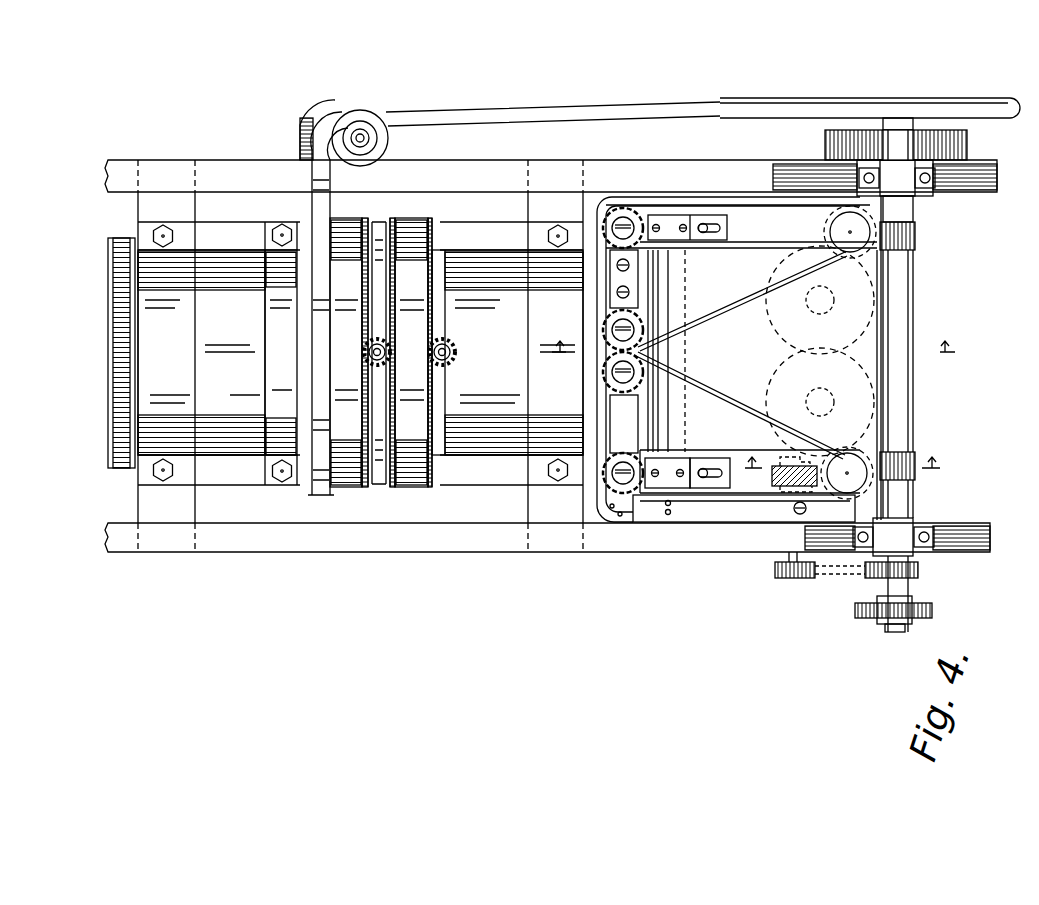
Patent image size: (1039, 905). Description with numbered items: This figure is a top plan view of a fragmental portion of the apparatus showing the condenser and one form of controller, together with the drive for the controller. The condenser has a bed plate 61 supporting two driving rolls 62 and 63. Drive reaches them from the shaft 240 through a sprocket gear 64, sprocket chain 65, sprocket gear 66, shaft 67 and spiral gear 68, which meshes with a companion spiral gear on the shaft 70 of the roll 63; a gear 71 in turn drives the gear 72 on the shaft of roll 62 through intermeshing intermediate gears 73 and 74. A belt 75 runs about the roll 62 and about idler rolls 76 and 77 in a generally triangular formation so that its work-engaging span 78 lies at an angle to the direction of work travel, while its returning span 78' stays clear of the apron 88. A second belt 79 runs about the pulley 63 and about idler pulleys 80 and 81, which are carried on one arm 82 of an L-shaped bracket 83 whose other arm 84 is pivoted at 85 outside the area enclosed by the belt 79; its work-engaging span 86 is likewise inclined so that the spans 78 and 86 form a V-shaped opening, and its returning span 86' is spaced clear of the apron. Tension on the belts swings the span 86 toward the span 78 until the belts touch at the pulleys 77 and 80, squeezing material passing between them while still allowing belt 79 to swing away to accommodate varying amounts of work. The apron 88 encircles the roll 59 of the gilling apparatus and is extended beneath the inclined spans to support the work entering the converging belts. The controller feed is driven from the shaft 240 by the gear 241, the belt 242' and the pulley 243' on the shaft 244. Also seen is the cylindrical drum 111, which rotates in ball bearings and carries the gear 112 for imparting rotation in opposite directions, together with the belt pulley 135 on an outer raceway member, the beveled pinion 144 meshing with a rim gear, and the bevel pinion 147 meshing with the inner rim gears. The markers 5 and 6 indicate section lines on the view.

The shaft 244 is at (308, 126).
The pulley 243' is at (393, 138).
The belt 242' is at (553, 102).
The gear 241 is at (988, 99).
The idler roll 76 is at (624, 208).
The returning span 78' is at (687, 203).
The shaft 70 is at (472, 262).
The belt 75 is at (741, 226).
The driving roll 62 is at (830, 233).
The gear 72 is at (885, 220).
The roll 59 is at (915, 238).
The apron 88 is at (915, 285).
The idler roll 77 is at (603, 330).
The work-engaging span 78 is at (742, 301).
The intermediate gear 74 is at (782, 330).
The section line 5 is at (754, 353).
The idler pulley 80 is at (603, 372).
The work-engaging span 86 is at (740, 403).
The intermediate gear 73 is at (780, 392).
The spiral gear 68 is at (770, 462).
The section line 6 is at (844, 469).
The gear 71 is at (905, 450).
The shaft 240 is at (910, 500).
The arm 82 is at (605, 462).
The idler pulley 81 is at (612, 478).
The pivot 85 is at (793, 508).
The driving roll 63 is at (845, 490).
The returning span 86' is at (745, 524).
The L-shaped bracket 83 is at (610, 520).
The bed plate 61 is at (613, 522).
The arm 84 is at (704, 516).
The belt 79 is at (742, 494).
The shaft 67 is at (787, 556).
The sprocket gear 66 is at (788, 579).
The sprocket chain 65 is at (838, 576).
The sprocket gear 64 is at (918, 572).
The cylindrical drum 111 is at (240, 448).
The belt pulley 135 is at (316, 470).
The gear 112 is at (115, 462).
The beveled pinion 144 is at (392, 356).
The bevel pinion 147 is at (452, 362).